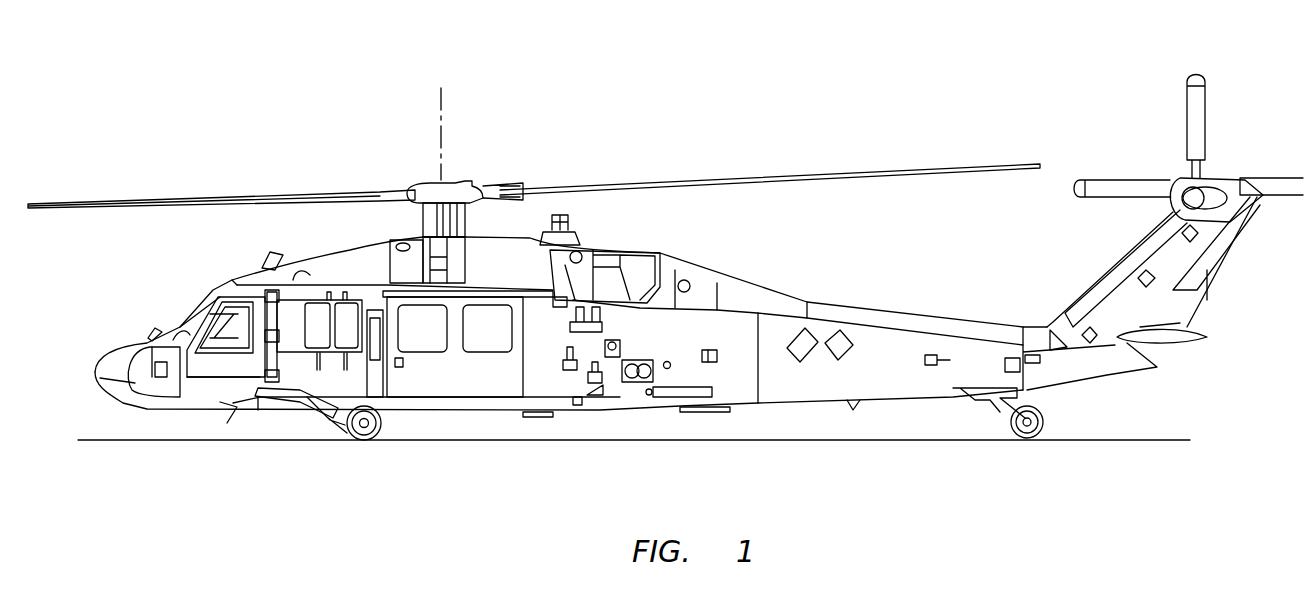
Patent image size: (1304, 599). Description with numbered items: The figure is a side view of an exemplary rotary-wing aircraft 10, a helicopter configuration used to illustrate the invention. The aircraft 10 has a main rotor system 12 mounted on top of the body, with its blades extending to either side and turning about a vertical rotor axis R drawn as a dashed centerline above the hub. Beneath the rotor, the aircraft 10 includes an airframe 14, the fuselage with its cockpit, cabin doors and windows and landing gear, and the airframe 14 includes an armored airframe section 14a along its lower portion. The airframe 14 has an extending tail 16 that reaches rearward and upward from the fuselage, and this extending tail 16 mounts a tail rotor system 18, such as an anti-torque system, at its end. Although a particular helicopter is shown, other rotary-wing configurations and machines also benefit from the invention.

The rotary-wing aircraft 10 is at (798, 77).
The main rotor system 12 is at (488, 148).
The airframe 14 is at (612, 414).
The armored airframe section 14a is at (453, 400).
The extending tail 16 is at (777, 395).
The tail rotor system 18 is at (1210, 127).
The rotor axis R is at (437, 111).